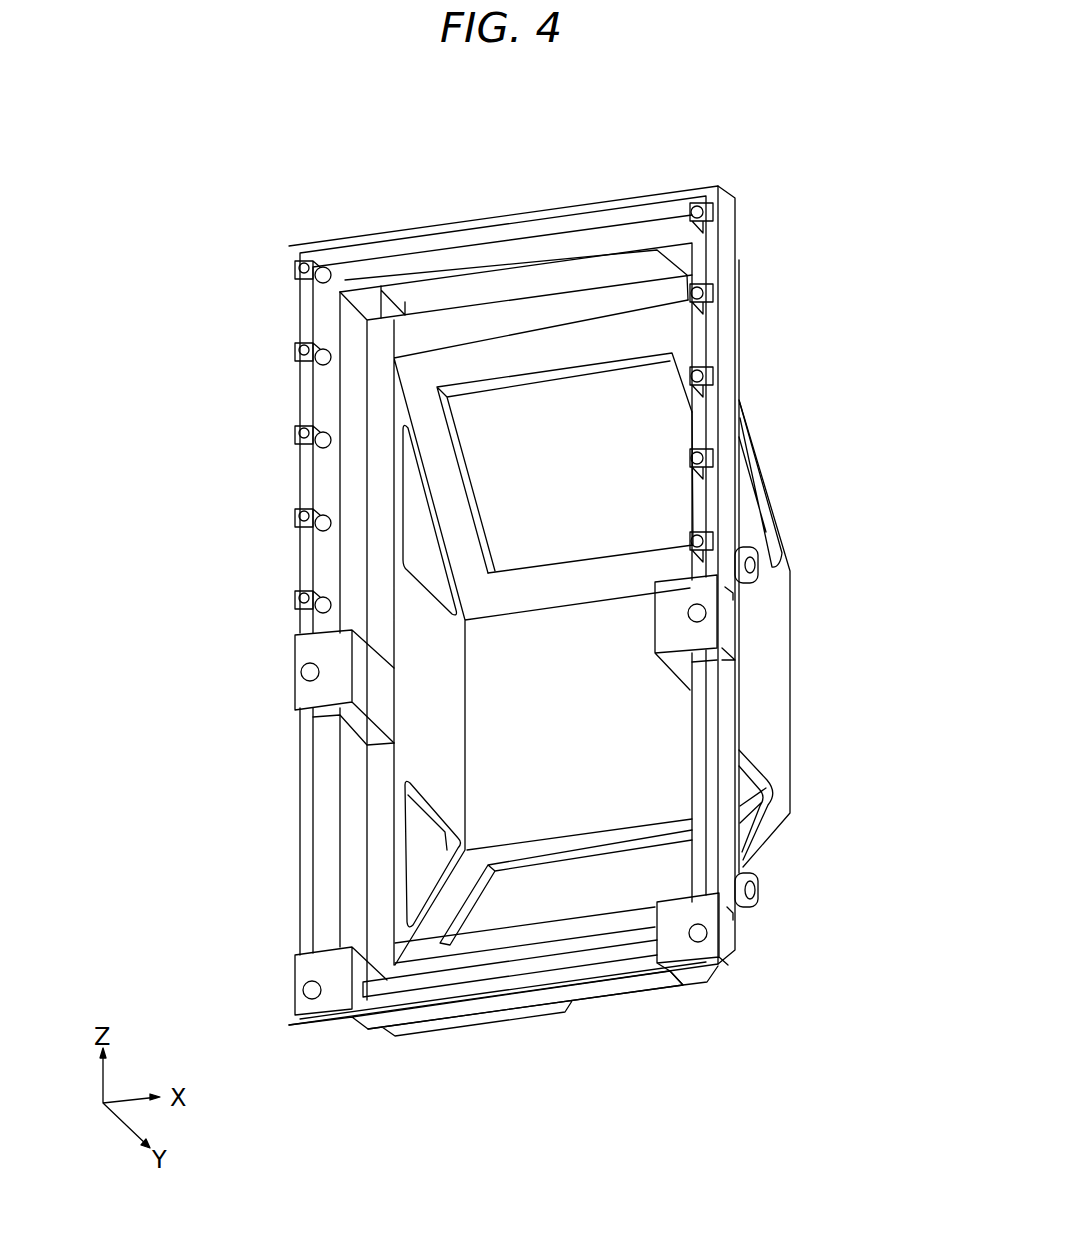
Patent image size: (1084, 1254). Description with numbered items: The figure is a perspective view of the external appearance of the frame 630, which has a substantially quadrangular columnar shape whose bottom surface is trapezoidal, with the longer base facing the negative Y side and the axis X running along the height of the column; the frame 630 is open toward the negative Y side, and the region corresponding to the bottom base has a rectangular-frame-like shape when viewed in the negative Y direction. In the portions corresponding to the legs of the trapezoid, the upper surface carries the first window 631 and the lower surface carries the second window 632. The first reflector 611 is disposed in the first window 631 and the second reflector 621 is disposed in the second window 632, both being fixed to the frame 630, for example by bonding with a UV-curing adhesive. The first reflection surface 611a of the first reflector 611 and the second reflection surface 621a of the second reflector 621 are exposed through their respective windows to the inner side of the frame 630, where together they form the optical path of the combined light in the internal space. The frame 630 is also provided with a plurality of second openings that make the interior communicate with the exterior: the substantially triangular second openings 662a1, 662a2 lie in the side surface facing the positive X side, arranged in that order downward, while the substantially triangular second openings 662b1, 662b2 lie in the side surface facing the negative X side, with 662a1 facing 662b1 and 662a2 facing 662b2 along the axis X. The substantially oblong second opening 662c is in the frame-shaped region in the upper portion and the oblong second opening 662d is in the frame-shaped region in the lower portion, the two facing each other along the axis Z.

The frame 630 is at (840, 103).
The first reflector 611 is at (597, 114).
The first reflection surface 611a is at (590, 397).
The first window 631 is at (458, 433).
The second opening 662c is at (405, 292).
The second opening 662b1 is at (432, 546).
The second opening 662b2 is at (432, 815).
The second opening 662a1 is at (752, 516).
The second opening 662a2 is at (752, 826).
The second window 632 is at (475, 905).
The second reflection surface 621a is at (560, 907).
The second opening 662d is at (647, 995).
The second reflector 621 is at (566, 1105).